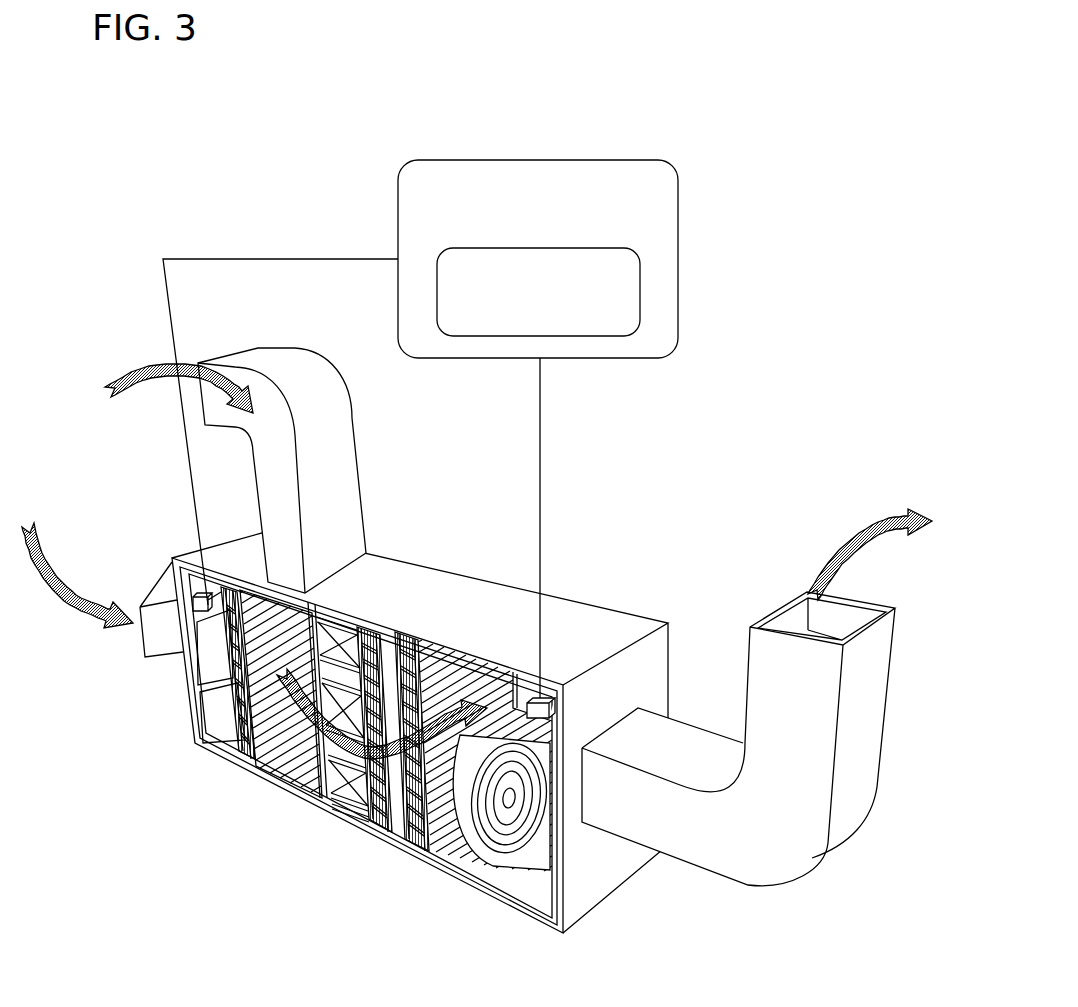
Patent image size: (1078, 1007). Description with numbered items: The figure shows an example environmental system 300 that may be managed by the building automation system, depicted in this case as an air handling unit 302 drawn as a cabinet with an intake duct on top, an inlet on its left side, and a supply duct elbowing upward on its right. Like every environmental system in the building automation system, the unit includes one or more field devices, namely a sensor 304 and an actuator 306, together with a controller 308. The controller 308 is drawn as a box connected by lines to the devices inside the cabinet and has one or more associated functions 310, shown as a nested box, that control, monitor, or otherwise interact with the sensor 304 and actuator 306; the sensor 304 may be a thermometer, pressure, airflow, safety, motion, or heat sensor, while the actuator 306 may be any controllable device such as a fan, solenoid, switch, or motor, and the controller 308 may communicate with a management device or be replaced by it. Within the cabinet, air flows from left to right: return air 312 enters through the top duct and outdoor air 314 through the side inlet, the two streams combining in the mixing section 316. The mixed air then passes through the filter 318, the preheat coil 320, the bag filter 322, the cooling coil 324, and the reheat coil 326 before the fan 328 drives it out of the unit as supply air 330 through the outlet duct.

The environmental system 300 is at (694, 93).
The air handling unit 302 is at (413, 856).
The sensor 304 is at (205, 603).
The actuator 306 is at (552, 707).
The controller 308 is at (516, 237).
The functions 310 is at (560, 324).
The return air 312 is at (135, 366).
The outdoor air 314 is at (58, 555).
The mixing section 316 is at (258, 652).
The filter 318 is at (218, 713).
The preheat coil 320 is at (270, 740).
The bag filter 322 is at (360, 806).
The cooling coil 324 is at (384, 660).
The reheat coil 326 is at (445, 677).
The fan 328 is at (512, 868).
The supply air 330 is at (858, 546).